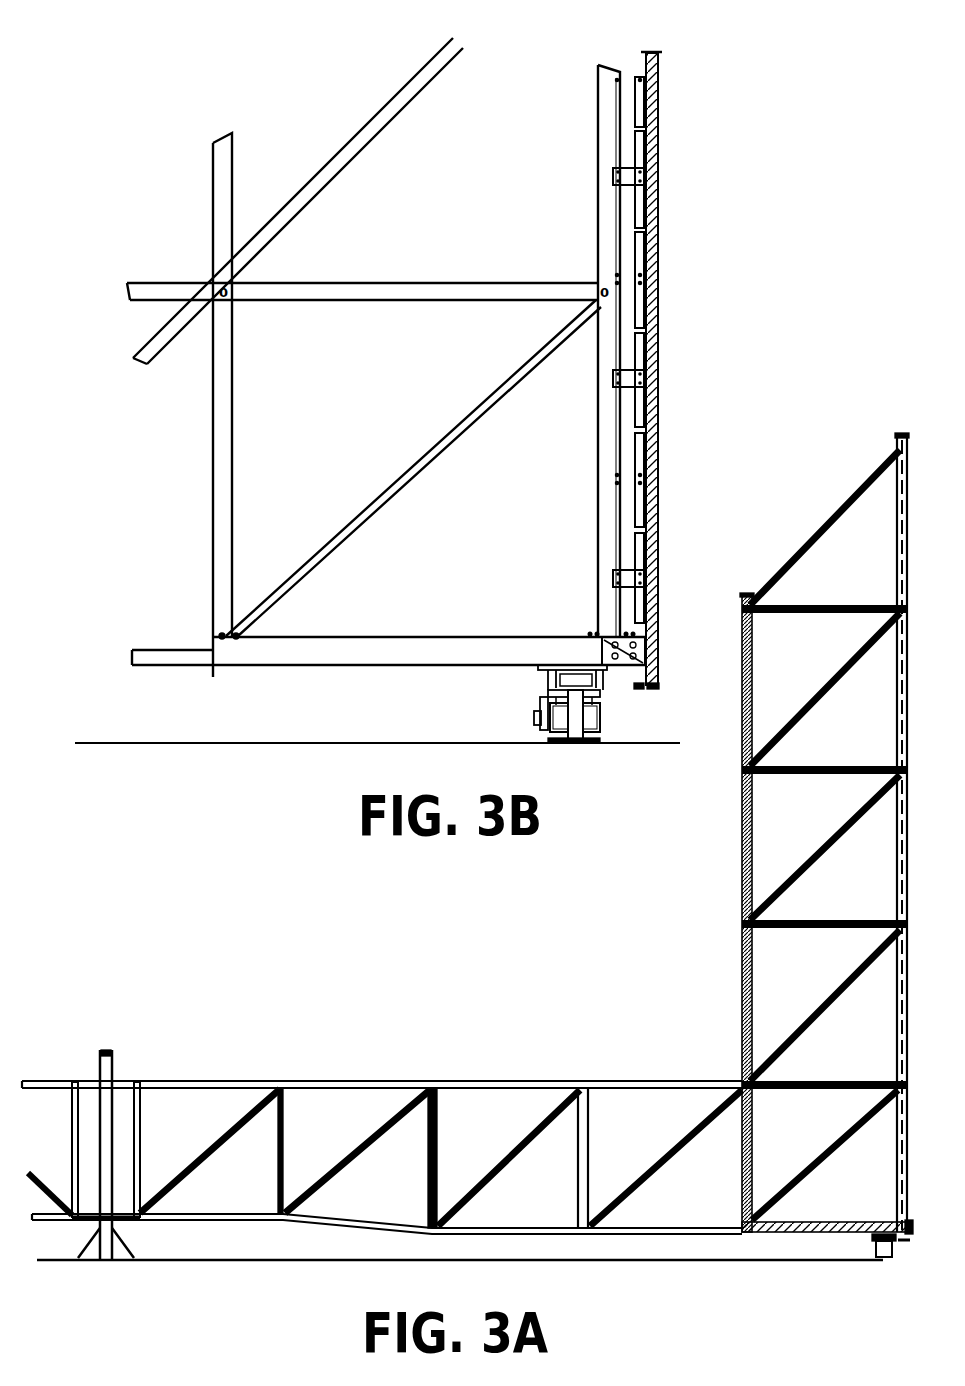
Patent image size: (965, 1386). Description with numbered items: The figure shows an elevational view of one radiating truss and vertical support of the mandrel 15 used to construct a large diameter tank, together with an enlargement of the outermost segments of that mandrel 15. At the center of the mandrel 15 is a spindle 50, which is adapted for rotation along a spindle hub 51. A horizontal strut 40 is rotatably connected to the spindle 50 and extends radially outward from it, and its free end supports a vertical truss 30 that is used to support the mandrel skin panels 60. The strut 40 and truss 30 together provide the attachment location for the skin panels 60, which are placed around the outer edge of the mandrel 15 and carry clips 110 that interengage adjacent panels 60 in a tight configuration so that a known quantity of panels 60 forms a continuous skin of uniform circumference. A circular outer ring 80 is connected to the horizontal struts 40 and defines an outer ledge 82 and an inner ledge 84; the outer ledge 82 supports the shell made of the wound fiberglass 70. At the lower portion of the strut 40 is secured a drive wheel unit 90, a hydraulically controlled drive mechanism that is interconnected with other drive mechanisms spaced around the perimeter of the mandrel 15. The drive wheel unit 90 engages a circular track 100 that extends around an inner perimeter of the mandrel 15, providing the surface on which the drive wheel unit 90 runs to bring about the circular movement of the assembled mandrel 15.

In FIG. 3A, the mandrel 15 is at (464, 846).
In FIG. 3B, the vertical truss 30 is at (607, 122).
In FIG. 3A, the vertical truss 30 is at (745, 975).
In FIG. 3B, the horizontal strut 40 is at (173, 667).
In FIG. 3A, the horizontal strut 40 is at (200, 1082).
In FIG. 3A, the spindle 50 is at (128, 1050).
In FIG. 3A, the spindle hub 51 is at (105, 1105).
In FIG. 3B, the mandrel skin panel 60 is at (642, 448).
In FIG. 3A, the mandrel skin panel 60 is at (905, 870).
In FIG. 3B, the wound fiberglass 70 is at (653, 440).
In FIG. 3B, the circular outer ring 80 is at (637, 648).
In FIG. 3B, the outer ledge 82 is at (653, 687).
In FIG. 3B, the inner ledge 84 is at (640, 688).
In FIG. 3B, the drive wheel unit 90 is at (603, 712).
In FIG. 3A, the drive wheel unit 90 is at (895, 1258).
In FIG. 3B, the circular track 100 is at (540, 737).
In FIG. 3B, the clip 110 is at (615, 180).